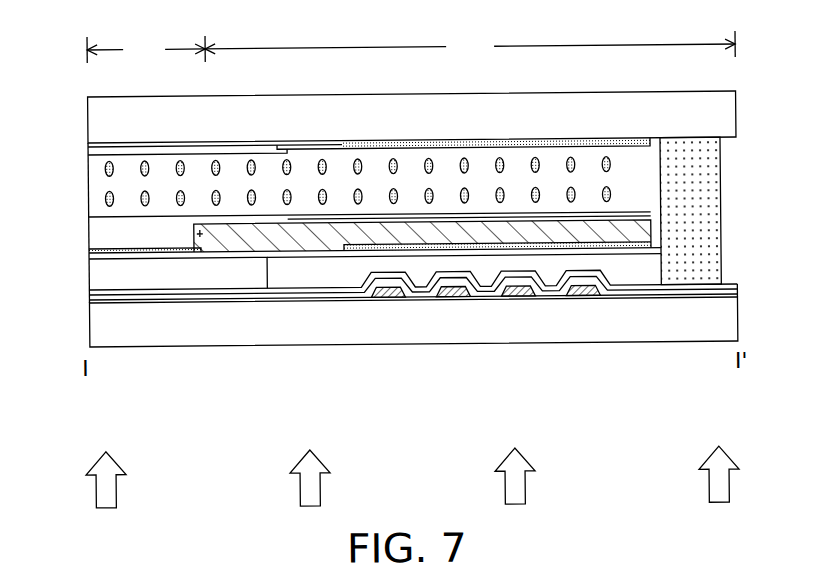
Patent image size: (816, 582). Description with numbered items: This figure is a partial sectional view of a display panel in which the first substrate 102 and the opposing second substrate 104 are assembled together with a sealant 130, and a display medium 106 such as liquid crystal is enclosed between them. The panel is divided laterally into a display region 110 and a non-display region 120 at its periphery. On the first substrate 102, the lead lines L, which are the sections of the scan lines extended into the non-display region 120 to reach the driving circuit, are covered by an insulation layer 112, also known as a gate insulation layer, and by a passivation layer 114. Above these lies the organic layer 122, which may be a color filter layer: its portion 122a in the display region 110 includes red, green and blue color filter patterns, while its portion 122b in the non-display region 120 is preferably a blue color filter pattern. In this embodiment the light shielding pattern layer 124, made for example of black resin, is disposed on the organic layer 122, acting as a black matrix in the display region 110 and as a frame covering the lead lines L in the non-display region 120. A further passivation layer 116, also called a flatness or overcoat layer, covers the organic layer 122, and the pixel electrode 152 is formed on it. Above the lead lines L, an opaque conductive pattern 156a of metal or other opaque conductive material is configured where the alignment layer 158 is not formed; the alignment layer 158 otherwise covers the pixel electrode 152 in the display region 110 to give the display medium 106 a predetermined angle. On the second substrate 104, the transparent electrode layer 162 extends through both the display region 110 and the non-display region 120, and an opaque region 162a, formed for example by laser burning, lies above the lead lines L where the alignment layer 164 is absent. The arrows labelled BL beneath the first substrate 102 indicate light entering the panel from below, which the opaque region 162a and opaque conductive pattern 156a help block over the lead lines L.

The display region 110 is at (146, 49).
The non-display region 120 is at (470, 47).
The second substrate 104 is at (722, 116).
The transparent electrode layer 162 is at (235, 148).
The opaque region 162a is at (522, 144).
The alignment layer 164 is at (92, 153).
The display medium 106 is at (105, 170).
The alignment layer 158 is at (102, 232).
The opaque conductive pattern 156a is at (630, 239).
The pixel electrode 152 is at (98, 251).
The passivation layer 116 is at (97, 261).
The organic layer 122 is at (376, 346).
The organic layer 122a is at (207, 275).
The organic layer 122b is at (305, 272).
The light shielding pattern layer 124 is at (199, 235).
The sealant 130 is at (700, 186).
The passivation layer 114 is at (732, 289).
The insulation layer 112 is at (732, 299).
The lead lines L is at (582, 304).
The first substrate 102 is at (667, 332).
The backlight BL is at (522, 492).